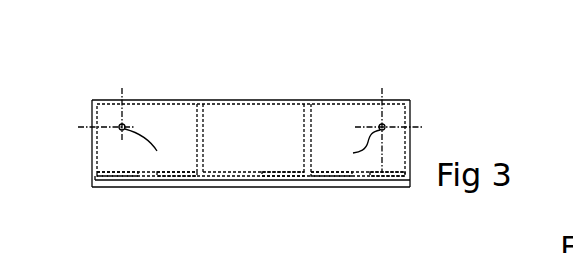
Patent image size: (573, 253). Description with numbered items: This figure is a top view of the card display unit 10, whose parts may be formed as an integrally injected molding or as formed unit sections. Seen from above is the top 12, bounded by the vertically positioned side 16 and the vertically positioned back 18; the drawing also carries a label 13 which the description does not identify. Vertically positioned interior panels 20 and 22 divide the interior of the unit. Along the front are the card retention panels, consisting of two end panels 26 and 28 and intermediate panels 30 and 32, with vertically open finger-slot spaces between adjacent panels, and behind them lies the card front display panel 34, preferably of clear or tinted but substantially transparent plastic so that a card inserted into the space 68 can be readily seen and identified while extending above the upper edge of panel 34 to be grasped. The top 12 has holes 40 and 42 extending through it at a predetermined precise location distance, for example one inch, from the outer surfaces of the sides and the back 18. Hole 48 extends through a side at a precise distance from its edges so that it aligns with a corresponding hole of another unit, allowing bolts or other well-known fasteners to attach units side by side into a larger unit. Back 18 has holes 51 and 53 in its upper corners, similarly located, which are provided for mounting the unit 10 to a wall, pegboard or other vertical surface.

The unit 10 is at (254, 94).
The top 12 is at (248, 128).
The left end wall 13 is at (92, 116).
The side 16 is at (413, 116).
The back 18 is at (288, 107).
The interior panel 20 is at (192, 126).
The interior panel 22 is at (312, 128).
The end panel 26 is at (128, 183).
The end panel 28 is at (381, 176).
The intermediate panel 30 is at (182, 187).
The intermediate panel 32 is at (272, 173).
The card front display panel 34 is at (333, 183).
The hole 40 is at (155, 149).
The hole 42 is at (352, 148).
The hole 48 is at (85, 130).
The hole 51 is at (118, 100).
The hole 53 is at (373, 98).
The space 68 is at (107, 183).